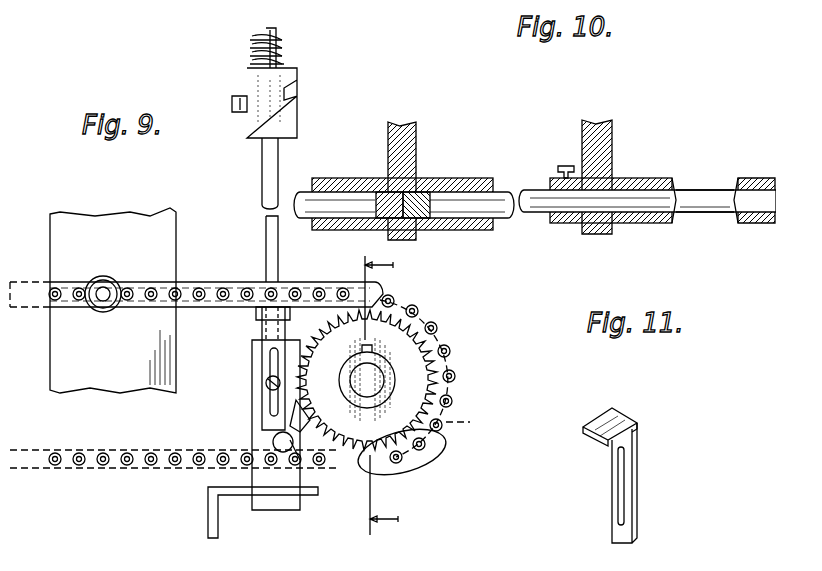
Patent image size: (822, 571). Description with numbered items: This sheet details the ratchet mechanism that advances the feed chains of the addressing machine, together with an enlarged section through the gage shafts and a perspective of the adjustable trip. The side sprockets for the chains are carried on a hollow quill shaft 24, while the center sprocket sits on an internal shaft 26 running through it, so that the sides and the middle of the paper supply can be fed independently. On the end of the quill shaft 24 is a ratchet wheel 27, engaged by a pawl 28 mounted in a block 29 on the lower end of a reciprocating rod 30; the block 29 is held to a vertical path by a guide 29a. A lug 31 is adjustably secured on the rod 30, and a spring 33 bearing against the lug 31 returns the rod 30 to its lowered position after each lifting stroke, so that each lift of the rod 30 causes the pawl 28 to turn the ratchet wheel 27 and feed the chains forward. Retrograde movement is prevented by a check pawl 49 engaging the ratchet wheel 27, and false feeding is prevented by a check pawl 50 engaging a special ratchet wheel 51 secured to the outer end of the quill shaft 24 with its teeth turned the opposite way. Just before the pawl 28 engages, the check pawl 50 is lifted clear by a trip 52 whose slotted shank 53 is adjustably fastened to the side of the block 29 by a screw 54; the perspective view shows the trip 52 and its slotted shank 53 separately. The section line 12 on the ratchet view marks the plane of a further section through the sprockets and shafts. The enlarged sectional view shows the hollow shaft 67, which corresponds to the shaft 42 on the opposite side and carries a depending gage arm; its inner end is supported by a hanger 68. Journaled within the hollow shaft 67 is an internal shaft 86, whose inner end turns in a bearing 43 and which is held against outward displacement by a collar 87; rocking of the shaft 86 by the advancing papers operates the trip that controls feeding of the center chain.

In FIG. 9, the section line 12 is at (375, 395).
In FIG. 9, the quill shaft 24 is at (376, 384).
In FIG. 9, the internal shaft 26 is at (388, 372).
In FIG. 9, the ratchet wheel 27 is at (473, 428).
In FIG. 9, the pawl 28 is at (300, 452).
In FIG. 9, the block 29 is at (280, 503).
In FIG. 9, the guide 29a is at (210, 505).
In FIG. 9, the reciprocating rod 30 is at (266, 236).
In FIG. 9, the lug 31 is at (280, 125).
In FIG. 9, the spring 33 is at (283, 58).
In FIG. 10, the shaft 42 is at (305, 200).
In FIG. 10, the bearing 43 is at (340, 182).
In FIG. 9, the check pawl 49 is at (430, 480).
In FIG. 9, the check pawl 50 is at (222, 307).
In FIG. 9, the ratchet wheel 51 is at (418, 336).
In FIG. 9, the trip 52 is at (272, 320).
In FIG. 11, the trip 52 is at (598, 418).
In FIG. 9, the slotted shank 53 is at (270, 350).
In FIG. 11, the slotted shank 53 is at (634, 485).
In FIG. 9, the screw 54 is at (268, 386).
In FIG. 10, the hollow shaft 67 is at (700, 212).
In FIG. 10, the hanger 68 is at (608, 158).
In FIG. 10, the internal shaft 86 is at (540, 212).
In FIG. 10, the collar 87 is at (548, 178).